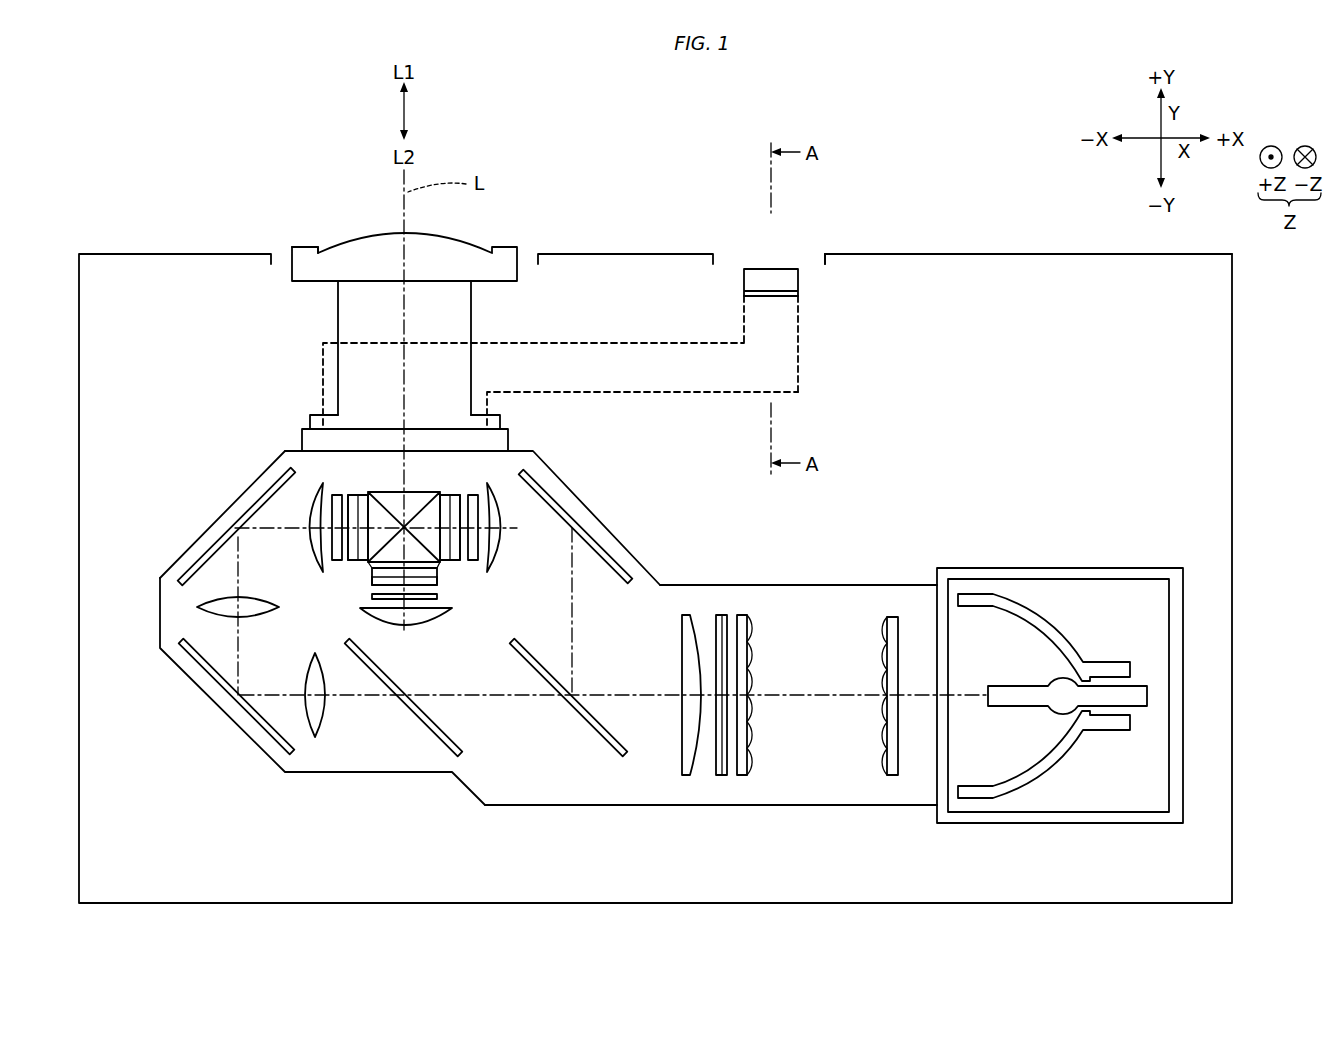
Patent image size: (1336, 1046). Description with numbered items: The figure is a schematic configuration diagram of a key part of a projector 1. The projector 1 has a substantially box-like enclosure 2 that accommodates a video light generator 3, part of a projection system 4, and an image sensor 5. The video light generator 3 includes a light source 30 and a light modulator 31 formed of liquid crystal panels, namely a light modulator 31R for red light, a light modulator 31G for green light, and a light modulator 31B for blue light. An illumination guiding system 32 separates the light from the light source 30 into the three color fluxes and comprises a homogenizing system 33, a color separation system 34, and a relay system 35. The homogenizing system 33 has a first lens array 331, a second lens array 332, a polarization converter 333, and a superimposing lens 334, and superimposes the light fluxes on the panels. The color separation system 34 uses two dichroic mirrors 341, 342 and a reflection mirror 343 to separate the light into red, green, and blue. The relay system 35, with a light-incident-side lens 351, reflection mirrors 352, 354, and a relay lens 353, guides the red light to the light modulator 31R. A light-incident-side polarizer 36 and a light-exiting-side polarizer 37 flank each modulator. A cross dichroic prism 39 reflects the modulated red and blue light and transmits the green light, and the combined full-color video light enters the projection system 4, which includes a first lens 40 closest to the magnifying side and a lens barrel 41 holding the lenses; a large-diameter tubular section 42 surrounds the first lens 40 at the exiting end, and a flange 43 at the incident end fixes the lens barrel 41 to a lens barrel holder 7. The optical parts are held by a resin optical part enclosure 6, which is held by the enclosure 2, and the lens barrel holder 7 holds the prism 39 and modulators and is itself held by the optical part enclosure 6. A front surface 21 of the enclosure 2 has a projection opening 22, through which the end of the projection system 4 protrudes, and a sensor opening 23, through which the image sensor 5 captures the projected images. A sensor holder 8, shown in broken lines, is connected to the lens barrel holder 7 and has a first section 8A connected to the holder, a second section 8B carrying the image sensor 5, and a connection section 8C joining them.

The projector 1 is at (970, 170).
The enclosure 2 is at (173, 242).
The front surface 21 is at (900, 254).
The projection opening 22 is at (538, 262).
The sensor opening 23 is at (825, 262).
The video light generator 3 is at (644, 666).
The light source 30 is at (1088, 560).
The light modulator 31 is at (408, 543).
The light modulator 31R is at (347, 492).
The light modulator 31G is at (372, 574).
The light modulator 31B is at (458, 495).
The illumination guiding system 32 is at (710, 797).
The homogenizing system 33 is at (782, 642).
The first lens array 331 is at (891, 616).
The second lens array 332 is at (742, 614).
The polarization converter 333 is at (722, 614).
The superimposing lens 334 is at (687, 659).
The color separation system 34 is at (509, 674).
The dichroic mirror 341 is at (622, 758).
The dichroic mirror 342 is at (458, 757).
The reflection mirror 343 is at (632, 586).
The relay system 35 is at (215, 668).
The light-incident-side lens 351 is at (312, 740).
The reflection mirror 352 is at (234, 712).
The relay lens 353 is at (198, 608).
The reflection mirror 354 is at (178, 584).
The light-incident-side polarizer 36 is at (337, 561).
The light-exiting-side polarizer 37 is at (357, 495).
The cross dichroic prism 39 is at (398, 500).
The projection system 4 is at (360, 305).
The first lens 40 is at (355, 240).
The lens barrel 41 is at (338, 319).
The large-diameter tubular section 42 is at (292, 265).
The flange 43 is at (333, 415).
The image sensor 5 is at (790, 269).
The optical part enclosure 6 is at (410, 773).
The lens barrel holder 7 is at (512, 441).
The sensor holder 8 is at (567, 370).
The first section 8A is at (318, 357).
The second section 8B is at (790, 325).
The connection section 8C is at (688, 397).